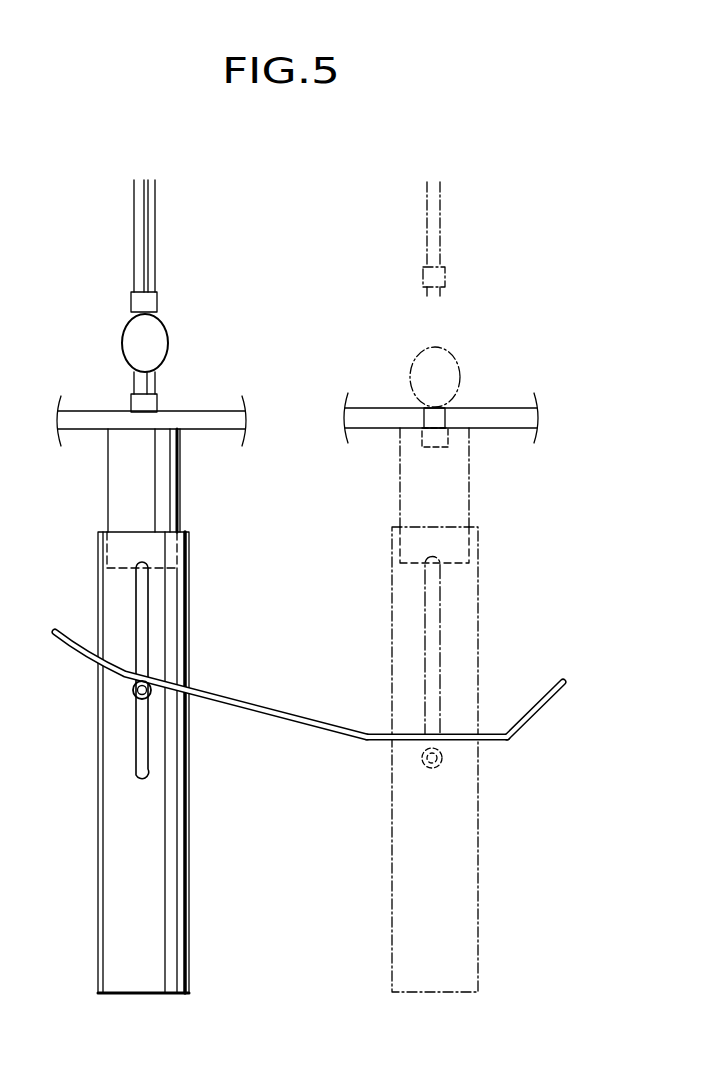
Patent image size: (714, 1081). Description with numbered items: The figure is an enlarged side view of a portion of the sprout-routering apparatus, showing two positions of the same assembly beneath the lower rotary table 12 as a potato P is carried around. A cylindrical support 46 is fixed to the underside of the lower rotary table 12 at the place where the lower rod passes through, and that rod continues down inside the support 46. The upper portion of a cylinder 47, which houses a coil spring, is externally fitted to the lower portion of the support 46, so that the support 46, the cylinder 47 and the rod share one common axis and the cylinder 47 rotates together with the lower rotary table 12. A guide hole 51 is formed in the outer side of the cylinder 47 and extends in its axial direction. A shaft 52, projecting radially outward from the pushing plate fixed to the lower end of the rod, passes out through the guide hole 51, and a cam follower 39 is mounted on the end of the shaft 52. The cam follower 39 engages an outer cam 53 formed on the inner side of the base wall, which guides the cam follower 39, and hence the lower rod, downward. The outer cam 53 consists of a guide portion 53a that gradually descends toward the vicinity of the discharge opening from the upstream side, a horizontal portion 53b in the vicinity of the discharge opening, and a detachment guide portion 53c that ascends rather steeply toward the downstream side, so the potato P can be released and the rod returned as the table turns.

The potato P is at (122, 332).
The lower rotary table 12 is at (212, 430).
The cam follower 39 is at (137, 704).
The cylindrical support 46 is at (115, 483).
The cylinder 47 is at (110, 868).
The guide hole 51 is at (140, 753).
The shaft 52 is at (132, 690).
The outer cam 53 is at (323, 741).
The guide portion 53a is at (230, 706).
The horizontal portion 53b is at (458, 746).
The detachment guide portion 53c is at (542, 712).